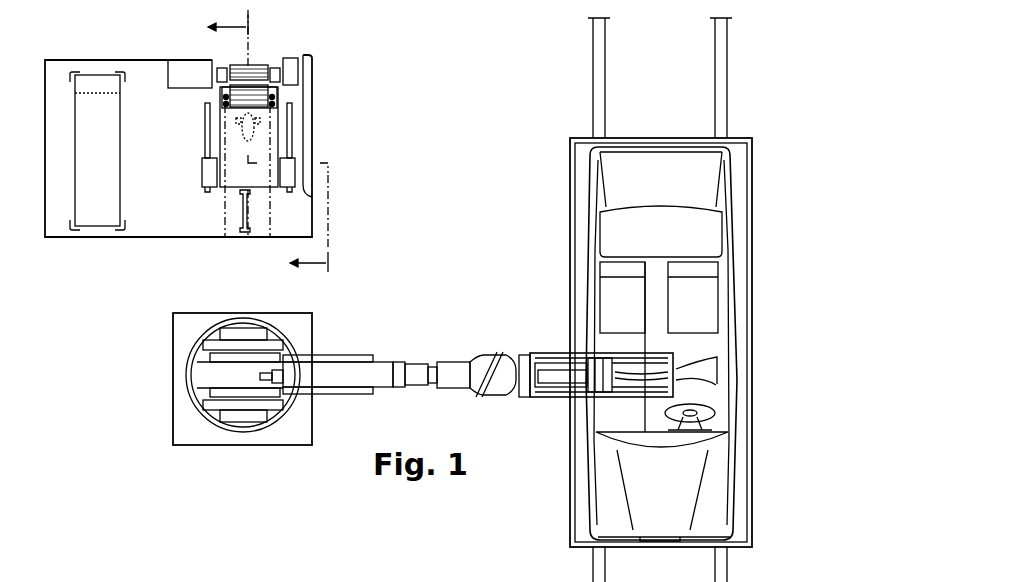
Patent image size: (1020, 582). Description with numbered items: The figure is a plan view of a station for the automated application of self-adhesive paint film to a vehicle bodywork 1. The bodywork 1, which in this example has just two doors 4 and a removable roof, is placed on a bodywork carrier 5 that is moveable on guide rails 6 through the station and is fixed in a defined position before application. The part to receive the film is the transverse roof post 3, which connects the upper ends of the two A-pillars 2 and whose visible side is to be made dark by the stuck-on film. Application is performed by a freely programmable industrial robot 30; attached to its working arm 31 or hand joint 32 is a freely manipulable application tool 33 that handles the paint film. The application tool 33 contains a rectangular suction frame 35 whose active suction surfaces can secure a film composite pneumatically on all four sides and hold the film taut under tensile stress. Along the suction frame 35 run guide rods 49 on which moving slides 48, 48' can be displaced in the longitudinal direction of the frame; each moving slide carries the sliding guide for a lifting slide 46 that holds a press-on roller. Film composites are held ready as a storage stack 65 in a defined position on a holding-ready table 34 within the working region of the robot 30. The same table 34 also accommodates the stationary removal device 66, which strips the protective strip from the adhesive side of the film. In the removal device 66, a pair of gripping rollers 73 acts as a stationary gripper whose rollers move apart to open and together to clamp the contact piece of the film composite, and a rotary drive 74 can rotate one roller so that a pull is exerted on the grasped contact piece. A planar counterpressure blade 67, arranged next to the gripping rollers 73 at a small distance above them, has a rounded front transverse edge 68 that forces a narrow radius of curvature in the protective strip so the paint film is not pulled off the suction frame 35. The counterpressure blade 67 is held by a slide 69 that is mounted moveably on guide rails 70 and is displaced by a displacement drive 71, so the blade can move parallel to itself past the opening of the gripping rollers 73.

The vehicle bodywork 1 is at (745, 191).
The A-pillars 2 is at (727, 403).
The transverse roof post 3 is at (688, 374).
The doors 4 is at (588, 330).
The bodywork carrier 5 is at (745, 508).
The guide rails 6 is at (722, 100).
The industrial robot 30 is at (205, 430).
The working arm 31 is at (378, 378).
The hand joint 32 is at (460, 345).
The application tool 33 is at (530, 402).
The holding-ready table 34 is at (93, 241).
The suction frame 35 is at (630, 353).
The lifting slide 46 is at (424, 576).
The moving slide 48 is at (603, 400).
The moving slide 48' is at (613, 392).
The guide rods 49 is at (563, 360).
The storage stack 65 is at (85, 153).
The removal device 66 is at (310, 95).
The counterpressure blade 67 is at (237, 135).
The transverse edge 68 is at (263, 110).
The slide 69 is at (288, 180).
The guide rails 70 is at (207, 142).
The displacement drive 71 is at (243, 208).
The pair of gripping rollers 73 is at (255, 95).
The rotary drive 74 is at (192, 72).